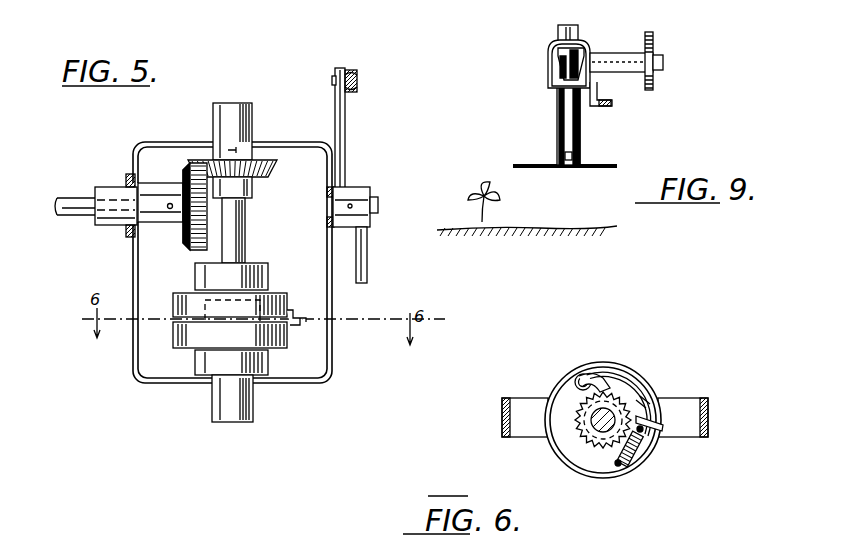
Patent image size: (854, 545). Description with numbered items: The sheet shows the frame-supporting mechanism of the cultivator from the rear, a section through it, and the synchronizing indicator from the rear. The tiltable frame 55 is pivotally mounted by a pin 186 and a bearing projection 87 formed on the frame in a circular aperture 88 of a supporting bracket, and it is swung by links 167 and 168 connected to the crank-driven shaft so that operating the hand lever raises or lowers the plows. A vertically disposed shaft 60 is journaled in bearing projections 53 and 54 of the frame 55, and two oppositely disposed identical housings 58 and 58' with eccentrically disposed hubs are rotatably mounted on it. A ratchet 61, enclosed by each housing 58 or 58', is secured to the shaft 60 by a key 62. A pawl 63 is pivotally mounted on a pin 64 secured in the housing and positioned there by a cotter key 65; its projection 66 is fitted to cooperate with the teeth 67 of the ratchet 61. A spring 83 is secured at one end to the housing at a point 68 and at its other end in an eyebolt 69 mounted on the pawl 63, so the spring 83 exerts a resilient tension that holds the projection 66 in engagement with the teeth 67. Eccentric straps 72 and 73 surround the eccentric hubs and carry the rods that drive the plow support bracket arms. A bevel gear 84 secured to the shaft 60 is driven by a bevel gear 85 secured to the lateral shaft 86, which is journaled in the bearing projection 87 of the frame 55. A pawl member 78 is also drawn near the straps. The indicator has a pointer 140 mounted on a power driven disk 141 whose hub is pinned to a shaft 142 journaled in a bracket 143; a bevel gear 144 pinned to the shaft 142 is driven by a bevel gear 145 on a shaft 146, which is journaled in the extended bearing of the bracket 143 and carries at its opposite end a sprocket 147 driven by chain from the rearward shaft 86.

In FIG. 5, the bearing projection 53 is at (253, 112).
In FIG. 5, the bearing projection 54 is at (254, 403).
In FIG. 5, the tiltable frame 55 is at (137, 381).
In FIG. 6, the tiltable frame 55 is at (504, 425).
In FIG. 5, the housing 58 is at (217, 305).
In FIG. 5, the housing 58' is at (217, 347).
In FIG. 6, the housing 58' is at (640, 410).
In FIG. 5, the vertically disposed shaft 60 is at (234, 242).
In FIG. 6, the vertically disposed shaft 60 is at (592, 422).
In FIG. 6, the ratchet 61 is at (584, 440).
In FIG. 6, the key 62 is at (588, 405).
In FIG. 6, the pawl 63 is at (645, 406).
In FIG. 6, the pin 64 is at (580, 375).
In FIG. 6, the cotter key 65 is at (606, 372).
In FIG. 6, the projection 66 is at (625, 386).
In FIG. 6, the teeth 67 is at (612, 442).
In FIG. 6, the point 68 is at (619, 466).
In FIG. 5, the eyebolt 69 is at (369, 256).
In FIG. 6, the eyebolt 69 is at (654, 432).
In FIG. 5, the eccentric strap 72 is at (269, 271).
In FIG. 5, the eccentric strap 73 is at (269, 362).
In FIG. 5, the pawl member 78 is at (297, 326).
In FIG. 6, the spring 83 is at (643, 434).
In FIG. 5, the bevel gear 84 is at (264, 178).
In FIG. 5, the bevel gear 85 is at (186, 243).
In FIG. 5, the shaft 86 is at (65, 218).
In FIG. 5, the bearing projection 87 is at (97, 188).
In FIG. 5, the circular aperture 88 is at (128, 176).
In FIG. 9, the pointer 140 is at (517, 163).
In FIG. 9, the power driven disk 141 is at (532, 163).
In FIG. 9, the shaft 142 is at (548, 84).
In FIG. 9, the bracket 143 is at (597, 104).
In FIG. 9, the bevel gear 144 is at (558, 52).
In FIG. 9, the bevel gear 145 is at (558, 72).
In FIG. 9, the shaft 146 is at (605, 50).
In FIG. 9, the sprocket 147 is at (657, 40).
In FIG. 5, the link 167 is at (351, 75).
In FIG. 5, the link 168 is at (346, 128).
In FIG. 5, the pin 186 is at (352, 208).